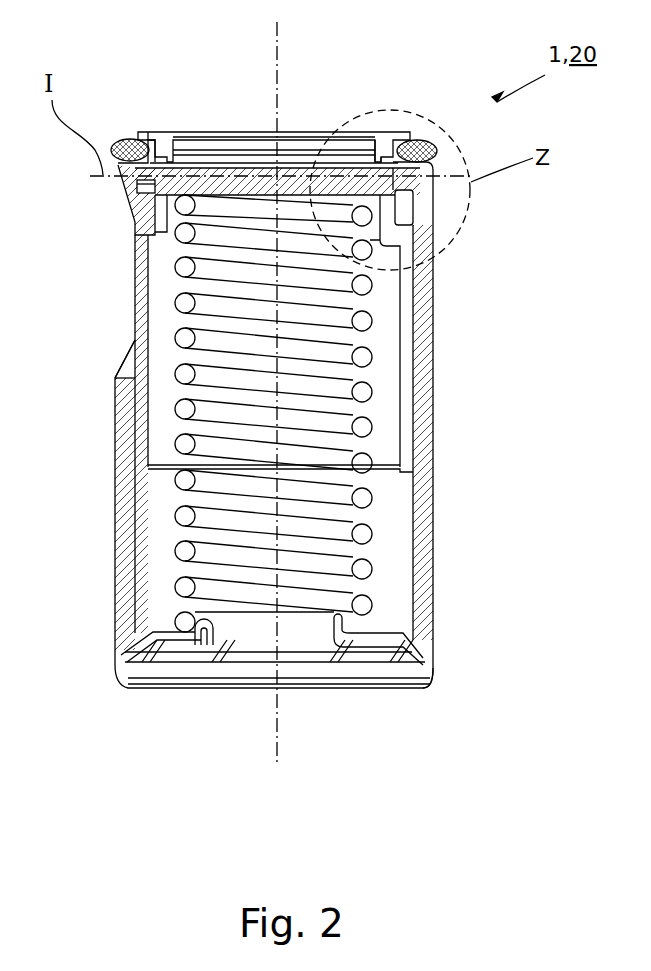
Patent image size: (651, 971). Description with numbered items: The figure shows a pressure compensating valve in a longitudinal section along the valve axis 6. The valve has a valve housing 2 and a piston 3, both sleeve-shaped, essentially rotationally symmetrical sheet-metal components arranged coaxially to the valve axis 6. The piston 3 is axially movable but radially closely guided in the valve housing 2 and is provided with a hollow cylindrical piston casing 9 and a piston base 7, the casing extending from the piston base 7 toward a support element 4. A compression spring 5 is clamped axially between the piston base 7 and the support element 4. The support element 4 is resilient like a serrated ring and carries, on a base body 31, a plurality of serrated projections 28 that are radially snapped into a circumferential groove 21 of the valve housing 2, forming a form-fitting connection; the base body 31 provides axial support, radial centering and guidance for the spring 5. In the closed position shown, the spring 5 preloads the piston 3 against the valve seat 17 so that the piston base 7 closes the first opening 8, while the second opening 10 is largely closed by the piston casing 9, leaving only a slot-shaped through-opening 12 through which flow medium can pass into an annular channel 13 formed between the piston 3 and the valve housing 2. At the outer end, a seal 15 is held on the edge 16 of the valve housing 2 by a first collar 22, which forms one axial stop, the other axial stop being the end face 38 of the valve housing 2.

The valve housing 2 is at (425, 507).
The piston 3 is at (415, 432).
The support element 4 is at (372, 650).
The spring 5 is at (365, 322).
The valve axis 6 is at (280, 758).
The piston base 7 is at (290, 183).
The first opening 8 is at (228, 160).
The piston casing 9 is at (120, 430).
The second opening 10 is at (116, 374).
The slot-shaped through-opening 12 is at (142, 215).
The annular channel 13 is at (405, 205).
The seal 15 is at (420, 143).
The edge 16 is at (150, 132).
The valve seat 17 is at (378, 158).
The circumferential groove 21 is at (435, 680).
The first collar 22 is at (138, 133).
The projections 28 is at (415, 645).
The base body 31 is at (136, 646).
The end face 38 is at (122, 226).